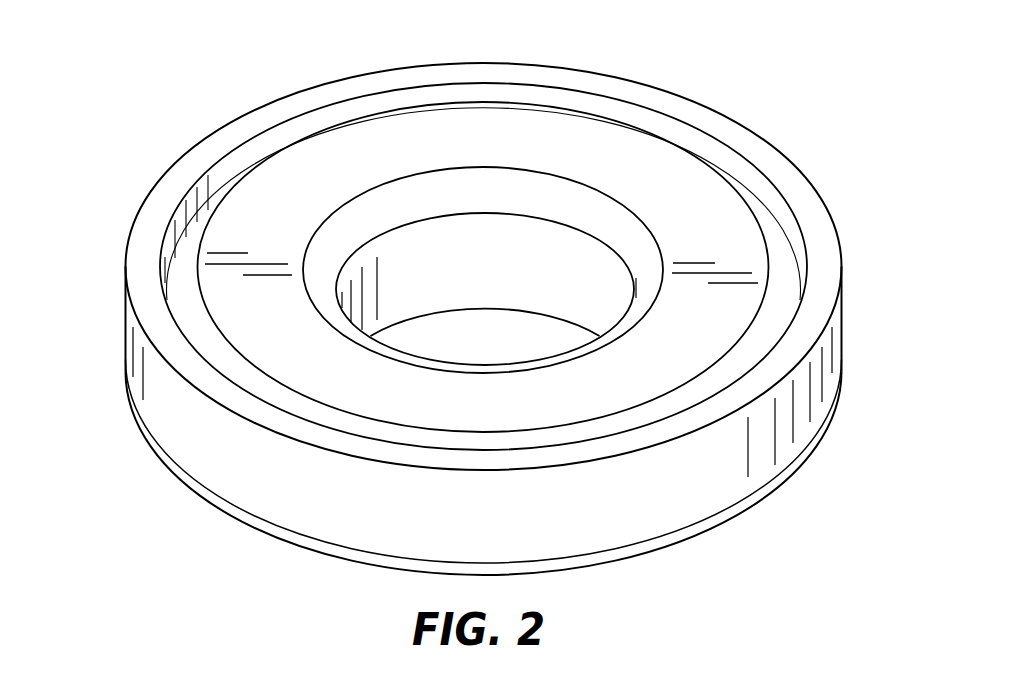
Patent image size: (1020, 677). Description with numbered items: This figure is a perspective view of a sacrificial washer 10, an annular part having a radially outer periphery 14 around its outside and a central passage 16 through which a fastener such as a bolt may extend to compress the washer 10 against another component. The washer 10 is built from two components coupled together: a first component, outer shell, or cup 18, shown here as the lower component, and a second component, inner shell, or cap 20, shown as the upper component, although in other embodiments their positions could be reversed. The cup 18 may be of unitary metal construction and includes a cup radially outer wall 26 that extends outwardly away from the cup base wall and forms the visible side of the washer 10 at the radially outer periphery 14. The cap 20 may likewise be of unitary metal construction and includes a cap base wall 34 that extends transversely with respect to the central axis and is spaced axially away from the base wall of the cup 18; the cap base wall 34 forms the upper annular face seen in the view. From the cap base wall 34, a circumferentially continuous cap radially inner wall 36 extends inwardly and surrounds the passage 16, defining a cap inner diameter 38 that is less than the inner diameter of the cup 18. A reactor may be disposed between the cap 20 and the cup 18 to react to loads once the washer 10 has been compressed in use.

The sacrificial washer 10 is at (793, 68).
The radially outer periphery 14 is at (92, 307).
The passage 16 is at (498, 352).
The cup 18 is at (734, 484).
The cap 20 is at (410, 130).
The cup radially outer wall 26 is at (185, 177).
The cap base wall 34 is at (635, 160).
The cap radially inner wall 36 is at (500, 274).
The cap inner diameter 38 is at (594, 288).